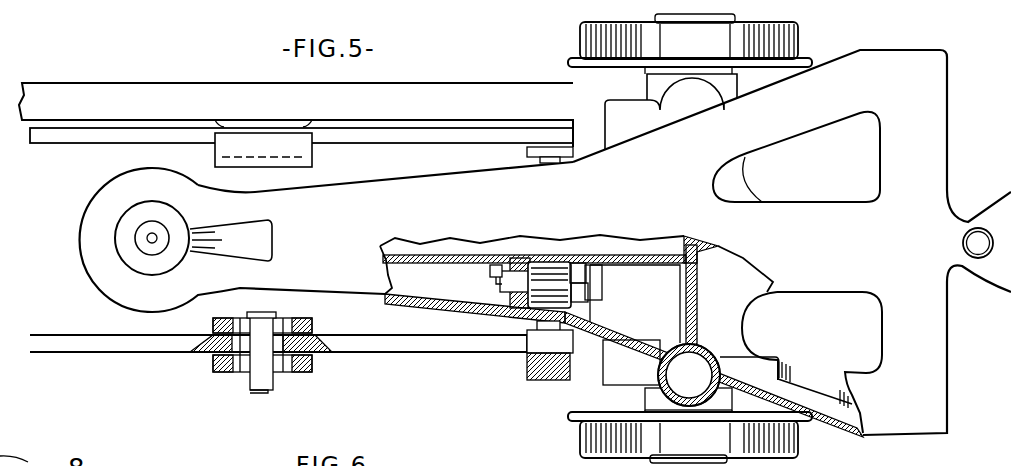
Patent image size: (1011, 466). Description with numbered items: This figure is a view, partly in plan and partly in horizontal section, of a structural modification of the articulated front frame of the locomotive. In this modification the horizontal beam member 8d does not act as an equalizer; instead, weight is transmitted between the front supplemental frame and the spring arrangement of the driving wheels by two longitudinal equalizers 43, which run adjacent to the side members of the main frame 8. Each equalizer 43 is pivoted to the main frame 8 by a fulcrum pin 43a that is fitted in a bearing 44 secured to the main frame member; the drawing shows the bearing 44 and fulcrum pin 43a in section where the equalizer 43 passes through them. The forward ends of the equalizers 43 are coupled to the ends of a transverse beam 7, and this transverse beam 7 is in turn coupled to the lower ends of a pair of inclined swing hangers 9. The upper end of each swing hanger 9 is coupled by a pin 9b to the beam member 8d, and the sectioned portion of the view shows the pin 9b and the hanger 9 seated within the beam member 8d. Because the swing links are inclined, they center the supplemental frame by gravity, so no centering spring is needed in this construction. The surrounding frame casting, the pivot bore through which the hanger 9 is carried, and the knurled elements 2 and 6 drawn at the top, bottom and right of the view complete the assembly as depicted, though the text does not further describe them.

The knurled knob 2 is at (583, 48).
The housing 6 is at (966, 230).
The transverse beam 7 is at (547, 160).
The main frame 8 is at (253, 100).
The horizontal beam member 8d is at (341, 276).
The inclined swing hanger 9 is at (580, 305).
The pin 9b is at (500, 280).
The equalizer 43 is at (353, 137).
The fulcrum pin 43a is at (263, 375).
The bearing 44 is at (220, 373).